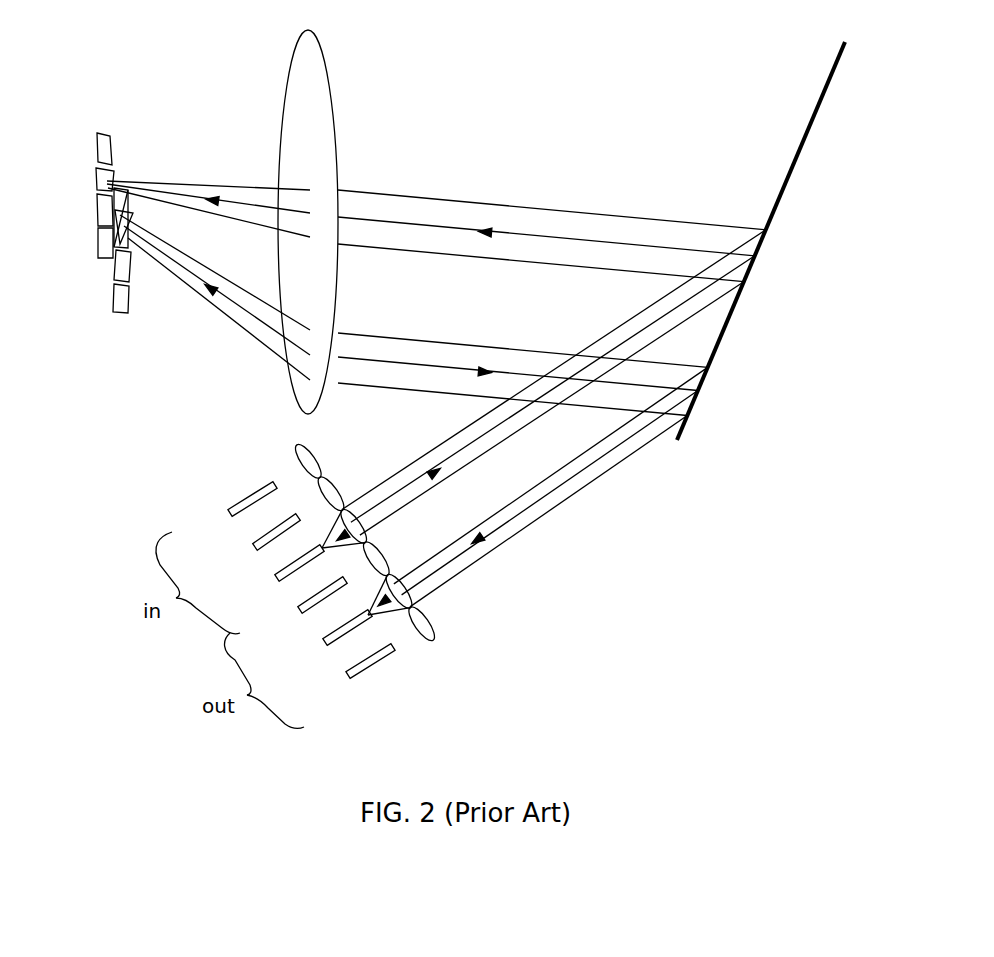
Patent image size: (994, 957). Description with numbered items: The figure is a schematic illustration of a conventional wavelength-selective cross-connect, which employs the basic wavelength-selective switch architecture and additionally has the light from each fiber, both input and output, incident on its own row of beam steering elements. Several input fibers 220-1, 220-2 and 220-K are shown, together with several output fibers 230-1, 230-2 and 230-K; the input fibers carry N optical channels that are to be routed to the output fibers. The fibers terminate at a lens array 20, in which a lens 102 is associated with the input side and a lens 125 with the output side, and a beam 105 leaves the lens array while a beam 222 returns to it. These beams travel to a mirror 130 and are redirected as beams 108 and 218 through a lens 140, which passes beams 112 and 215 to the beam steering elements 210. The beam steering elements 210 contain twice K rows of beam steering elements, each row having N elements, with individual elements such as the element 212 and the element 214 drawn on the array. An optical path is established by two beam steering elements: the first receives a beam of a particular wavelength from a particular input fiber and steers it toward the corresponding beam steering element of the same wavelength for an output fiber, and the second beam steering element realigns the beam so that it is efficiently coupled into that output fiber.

The lens 140 is at (308, 209).
The scanning mirror 130 is at (775, 224).
The beam steering elements 210 is at (109, 199).
The detector element 212 is at (97, 180).
The emitter element 214 is at (113, 248).
The received beam 112 is at (208, 195).
The transmitted beam 215 is at (215, 297).
The reflected received beam 108 is at (552, 229).
The collimated transmitted beam 218 is at (523, 365).
The input beam 105 is at (554, 382).
The output beam 222 is at (551, 487).
The lens array 20 is at (374, 542).
The input lens 102 is at (335, 527).
The output lens 125 is at (380, 593).
The input fiber 220-1 is at (222, 511).
The input fiber 220-2 is at (244, 543).
The input fiber 220-K is at (270, 575).
The output fiber 230-1 is at (291, 607).
The output fiber 230-2 is at (316, 640).
The output fiber 230-K is at (340, 673).